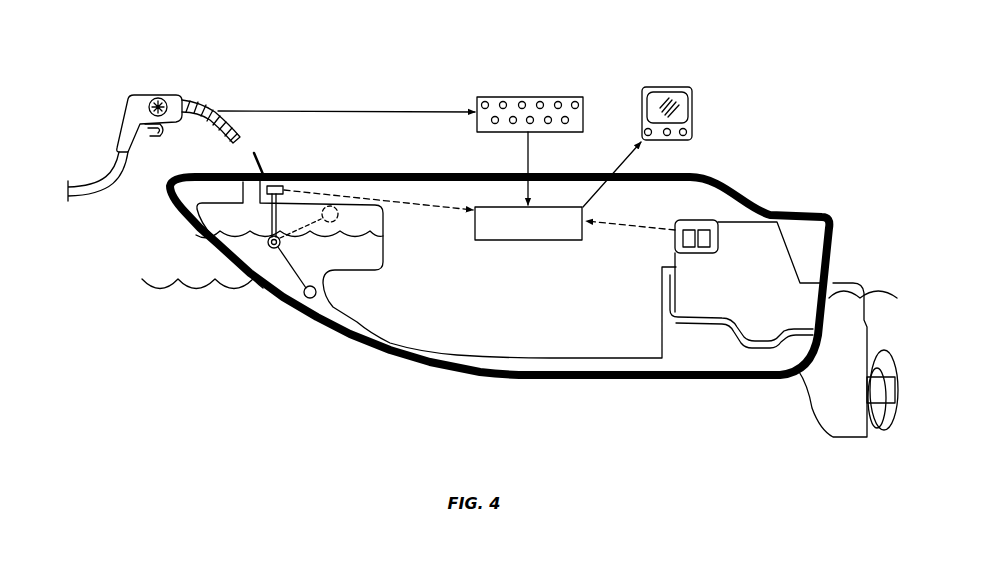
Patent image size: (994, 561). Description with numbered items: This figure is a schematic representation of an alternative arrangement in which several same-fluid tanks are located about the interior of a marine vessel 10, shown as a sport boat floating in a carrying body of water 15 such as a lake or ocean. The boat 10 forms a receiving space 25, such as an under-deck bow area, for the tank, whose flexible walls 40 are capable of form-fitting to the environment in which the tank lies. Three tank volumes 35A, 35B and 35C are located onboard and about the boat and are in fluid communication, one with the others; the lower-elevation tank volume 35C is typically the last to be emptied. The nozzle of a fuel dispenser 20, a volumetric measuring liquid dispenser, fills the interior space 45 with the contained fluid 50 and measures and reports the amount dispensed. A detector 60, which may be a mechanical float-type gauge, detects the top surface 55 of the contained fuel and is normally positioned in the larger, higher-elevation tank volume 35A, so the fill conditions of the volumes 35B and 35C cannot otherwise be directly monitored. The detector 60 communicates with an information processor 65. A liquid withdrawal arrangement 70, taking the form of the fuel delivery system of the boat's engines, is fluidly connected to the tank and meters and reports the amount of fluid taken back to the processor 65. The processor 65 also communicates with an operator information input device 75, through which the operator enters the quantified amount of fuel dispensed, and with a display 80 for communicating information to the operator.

The marine vessel 10 is at (826, 132).
The body of water 15 is at (206, 322).
The fuel dispenser 20 is at (150, 77).
The receiving space 25 is at (190, 192).
The tank volume 35A is at (392, 224).
The tank volume 35B is at (480, 360).
The tank volume 35C is at (700, 360).
The flexible walls 40 is at (330, 205).
The interior space 45 is at (212, 223).
The contained fluid 50 is at (320, 311).
The top surface 55 is at (343, 233).
The detector 60 is at (278, 184).
The information processor 65 is at (520, 231).
The liquid withdrawal arrangement 70 is at (735, 213).
The operator information input device 75 is at (562, 95).
The display 80 is at (682, 87).